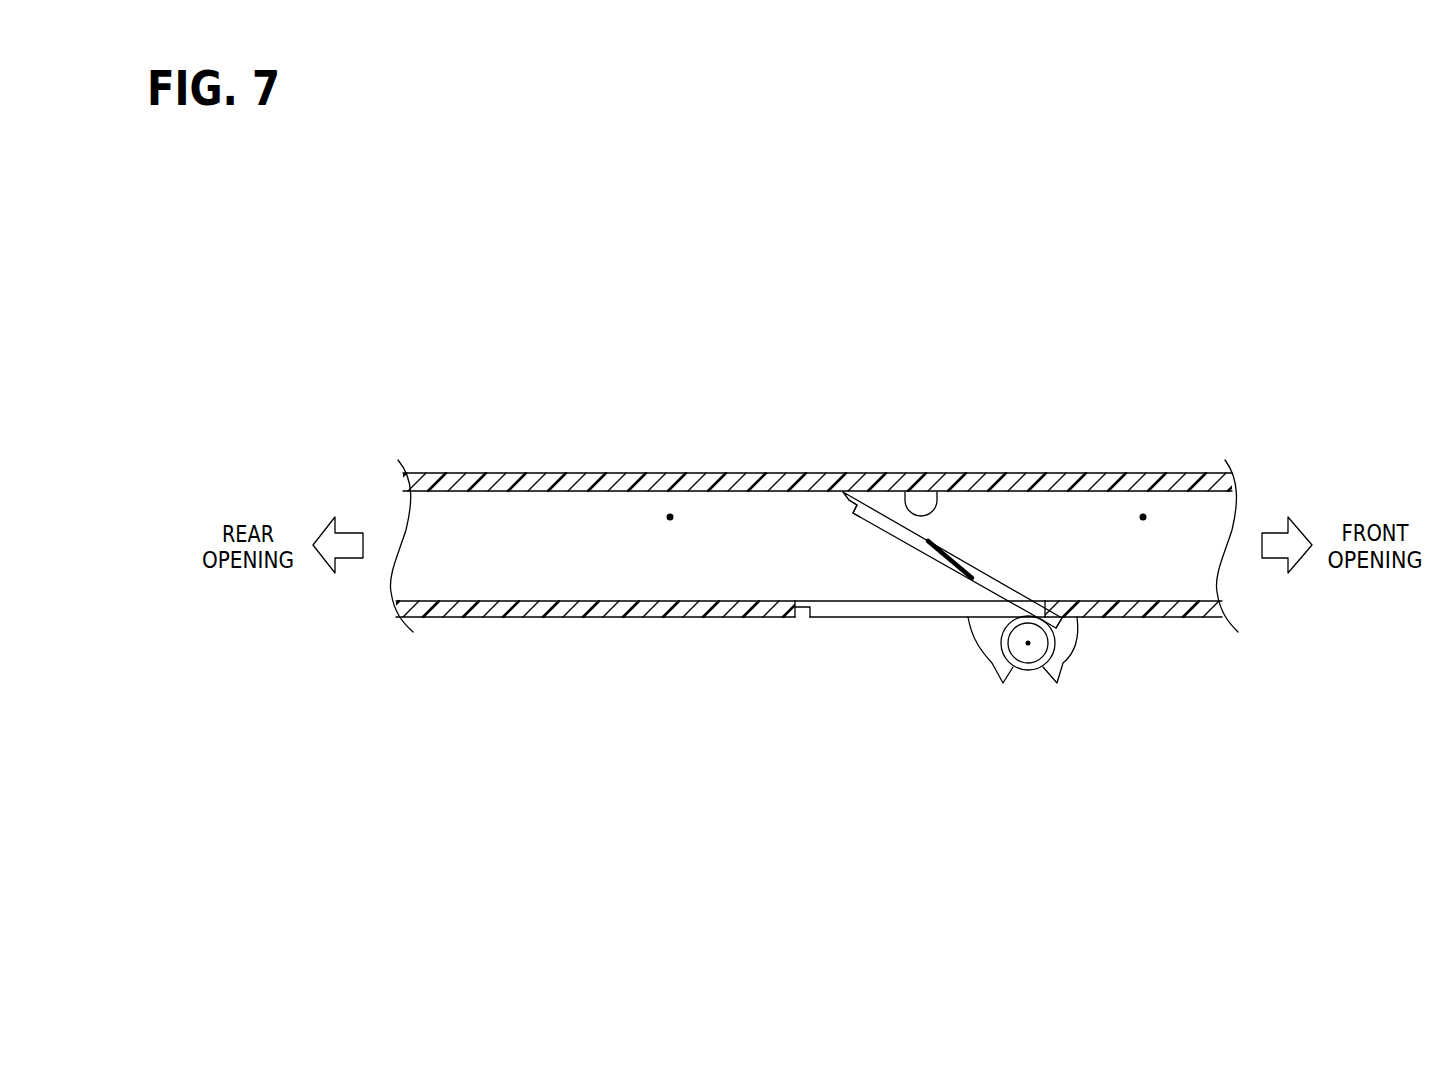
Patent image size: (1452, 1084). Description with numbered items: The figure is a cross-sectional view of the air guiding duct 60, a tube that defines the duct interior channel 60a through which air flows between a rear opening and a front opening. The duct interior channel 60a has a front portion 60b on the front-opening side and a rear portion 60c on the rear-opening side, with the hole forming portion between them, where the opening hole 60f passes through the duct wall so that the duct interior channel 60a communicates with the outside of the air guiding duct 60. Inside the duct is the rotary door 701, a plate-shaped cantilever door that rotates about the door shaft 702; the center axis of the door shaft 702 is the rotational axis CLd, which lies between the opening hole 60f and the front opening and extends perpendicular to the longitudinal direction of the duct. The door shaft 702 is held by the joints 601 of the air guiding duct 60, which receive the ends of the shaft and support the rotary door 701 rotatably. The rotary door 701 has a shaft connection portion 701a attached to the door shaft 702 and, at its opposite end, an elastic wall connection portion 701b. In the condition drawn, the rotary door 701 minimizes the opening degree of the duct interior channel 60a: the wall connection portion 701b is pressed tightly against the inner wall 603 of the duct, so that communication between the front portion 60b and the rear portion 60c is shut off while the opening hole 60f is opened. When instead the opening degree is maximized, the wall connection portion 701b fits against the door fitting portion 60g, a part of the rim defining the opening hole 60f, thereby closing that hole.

The air guiding duct 60 is at (556, 606).
The duct interior channel 60a is at (1040, 306).
The front portion 60b is at (1143, 517).
The rear portion 60c is at (670, 517).
The opening hole 60f is at (812, 609).
The door fitting portion 60g is at (808, 598).
The joint 601 is at (993, 665).
The inner wall 603 is at (933, 492).
The rotary door 701 is at (952, 547).
The shaft connection portion 701a is at (1050, 598).
The wall connection portion 701b is at (852, 505).
The door shaft 702 is at (1028, 645).
The rotational axis CLd is at (1032, 662).